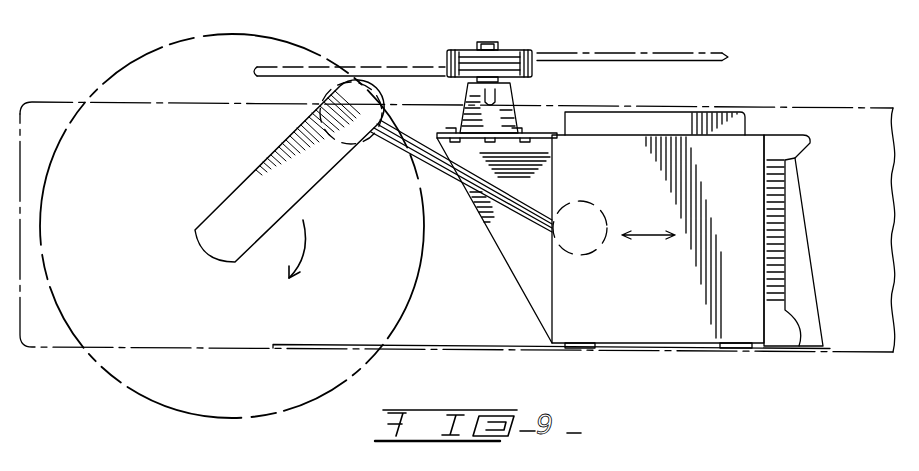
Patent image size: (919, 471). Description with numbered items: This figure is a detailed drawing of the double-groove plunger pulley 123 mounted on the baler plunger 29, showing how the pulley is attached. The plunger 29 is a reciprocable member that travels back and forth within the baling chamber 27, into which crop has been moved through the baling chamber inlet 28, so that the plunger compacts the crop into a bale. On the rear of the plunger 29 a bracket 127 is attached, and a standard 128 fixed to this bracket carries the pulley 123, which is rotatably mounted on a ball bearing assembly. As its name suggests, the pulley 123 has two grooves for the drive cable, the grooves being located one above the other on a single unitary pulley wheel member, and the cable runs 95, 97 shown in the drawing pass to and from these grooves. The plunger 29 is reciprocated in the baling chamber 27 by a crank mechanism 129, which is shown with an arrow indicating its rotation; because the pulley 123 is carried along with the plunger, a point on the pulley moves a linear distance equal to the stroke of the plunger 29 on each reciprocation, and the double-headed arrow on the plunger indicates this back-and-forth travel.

The baling chamber 27 is at (843, 135).
The baling chamber inlet 28 is at (677, 122).
The plunger 29 is at (605, 337).
The belt 95 is at (648, 52).
The belt 97 is at (392, 37).
The double-groove plunger pulley 123 is at (512, 55).
The bracket 127 is at (507, 233).
The standard 128 is at (518, 96).
The crank mechanism 129 is at (250, 195).